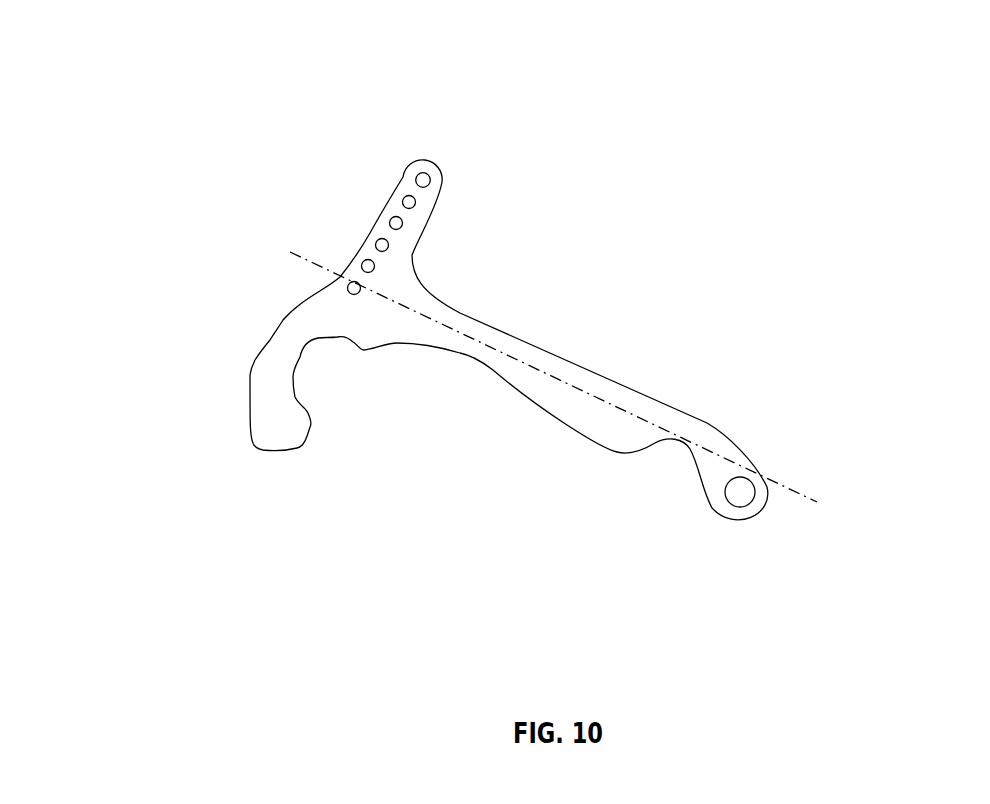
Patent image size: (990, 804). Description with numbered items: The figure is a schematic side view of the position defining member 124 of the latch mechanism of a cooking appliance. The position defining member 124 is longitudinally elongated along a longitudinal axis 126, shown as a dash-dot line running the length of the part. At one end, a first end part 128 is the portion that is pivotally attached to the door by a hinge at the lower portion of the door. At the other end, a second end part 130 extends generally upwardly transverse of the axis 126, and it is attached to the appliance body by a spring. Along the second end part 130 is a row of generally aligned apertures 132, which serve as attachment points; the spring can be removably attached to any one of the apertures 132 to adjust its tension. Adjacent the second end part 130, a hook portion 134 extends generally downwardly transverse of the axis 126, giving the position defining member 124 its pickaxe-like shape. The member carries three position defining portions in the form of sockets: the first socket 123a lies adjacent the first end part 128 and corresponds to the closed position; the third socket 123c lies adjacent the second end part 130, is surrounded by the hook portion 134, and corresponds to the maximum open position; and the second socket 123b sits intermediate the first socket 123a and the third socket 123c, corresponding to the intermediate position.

The first socket 123a is at (699, 448).
The second socket 123b is at (492, 366).
The third socket 123c is at (312, 338).
The position defining member 124 is at (585, 385).
The longitudinal axis 126 is at (803, 495).
The first end part 128 is at (718, 493).
The second end part 130 is at (368, 232).
The apertures 132 is at (405, 177).
The hook portion 134 is at (273, 420).